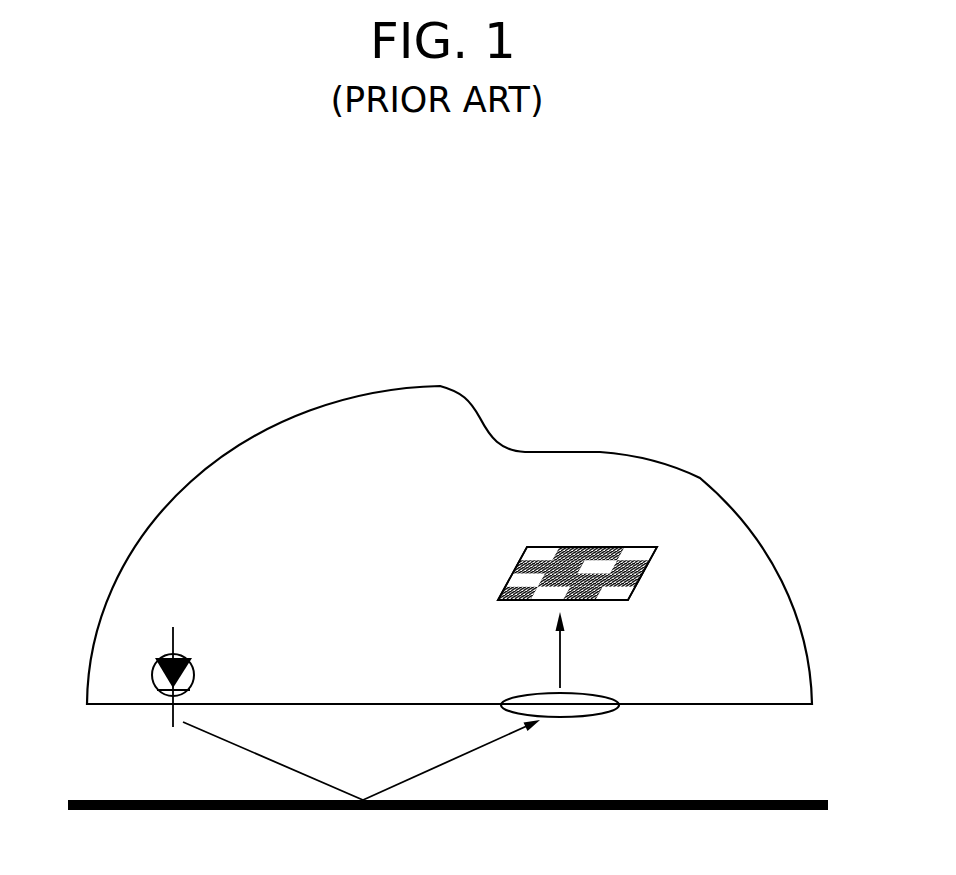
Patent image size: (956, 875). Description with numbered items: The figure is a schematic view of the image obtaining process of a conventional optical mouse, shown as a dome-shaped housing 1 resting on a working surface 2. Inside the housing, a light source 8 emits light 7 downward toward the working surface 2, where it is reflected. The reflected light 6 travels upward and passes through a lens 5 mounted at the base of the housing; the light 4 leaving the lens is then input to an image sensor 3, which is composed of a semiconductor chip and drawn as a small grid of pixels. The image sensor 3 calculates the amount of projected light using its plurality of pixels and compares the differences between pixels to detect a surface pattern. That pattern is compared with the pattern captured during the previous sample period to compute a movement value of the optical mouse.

The housing 1 is at (730, 502).
The working surface 2 is at (596, 813).
The image sensor 3 is at (607, 547).
The reflected light to sensor 4 is at (558, 640).
The lens 5 is at (610, 697).
The reflected light 6 is at (435, 767).
The light 7 is at (275, 762).
The light source 8 is at (195, 675).